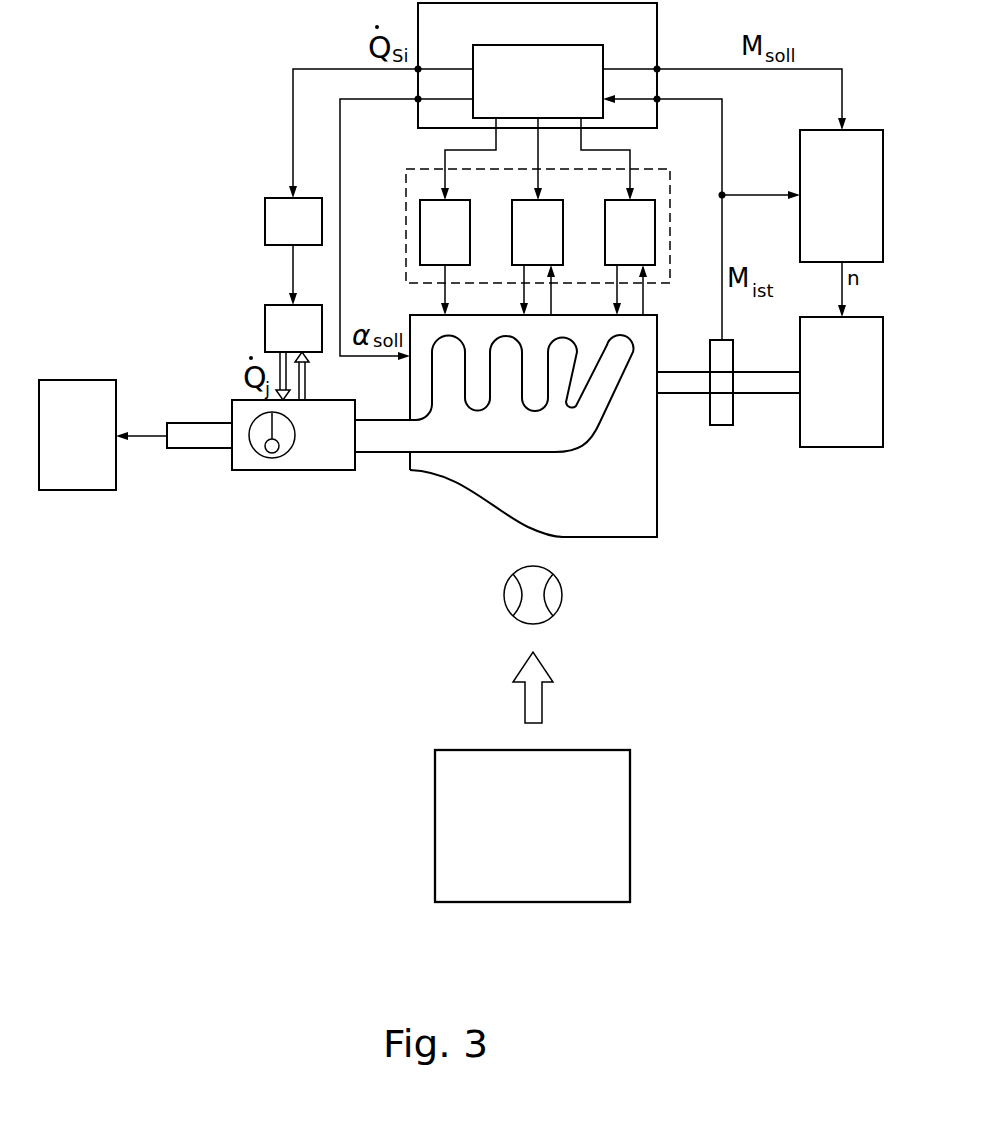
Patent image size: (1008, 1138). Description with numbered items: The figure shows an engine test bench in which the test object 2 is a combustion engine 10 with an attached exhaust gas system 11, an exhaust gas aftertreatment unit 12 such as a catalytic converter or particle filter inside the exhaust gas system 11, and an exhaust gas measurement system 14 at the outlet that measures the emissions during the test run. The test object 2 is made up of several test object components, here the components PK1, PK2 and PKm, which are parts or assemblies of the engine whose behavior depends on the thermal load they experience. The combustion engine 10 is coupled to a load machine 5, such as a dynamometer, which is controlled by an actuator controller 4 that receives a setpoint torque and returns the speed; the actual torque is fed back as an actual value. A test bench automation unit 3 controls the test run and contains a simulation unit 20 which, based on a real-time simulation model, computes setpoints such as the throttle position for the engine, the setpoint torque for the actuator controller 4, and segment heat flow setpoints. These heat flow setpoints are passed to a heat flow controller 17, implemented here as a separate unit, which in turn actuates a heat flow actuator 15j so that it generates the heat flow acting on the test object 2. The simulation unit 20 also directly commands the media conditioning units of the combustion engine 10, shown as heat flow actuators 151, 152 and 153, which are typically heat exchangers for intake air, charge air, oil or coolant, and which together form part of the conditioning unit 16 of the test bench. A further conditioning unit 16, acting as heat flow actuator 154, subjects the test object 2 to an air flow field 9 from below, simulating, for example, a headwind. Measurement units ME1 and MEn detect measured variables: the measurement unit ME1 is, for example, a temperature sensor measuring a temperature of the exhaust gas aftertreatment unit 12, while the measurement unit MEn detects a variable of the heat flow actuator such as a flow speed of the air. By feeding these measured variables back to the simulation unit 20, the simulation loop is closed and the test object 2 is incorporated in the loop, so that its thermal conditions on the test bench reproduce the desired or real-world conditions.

The test bench automation unit 3 is at (622, 48).
The simulation unit 20 is at (521, 88).
The heat flow controller 17 is at (276, 238).
The heat flow actuator 15j is at (315, 341).
The heat flow actuator 151 is at (465, 247).
The heat flow actuator 152 is at (557, 247).
The heat flow actuator 153 is at (650, 247).
The heat flow actuator 154 is at (654, 799).
The conditioning unit 16 is at (652, 168).
The actuator controller 4 is at (862, 208).
The load machine 5 is at (827, 395).
The combustion engine 10 is at (579, 501).
The exhaust gas system 11 is at (385, 437).
The exhaust gas aftertreatment unit 12 is at (311, 447).
The exhaust gas measurement system 14 is at (55, 443).
The test object 2 is at (450, 507).
The air flow field 9 is at (542, 700).
The measurement unit ME1 is at (268, 458).
The measurement unit MEn is at (563, 597).
The test object component PK1 is at (300, 490).
The test object component PK2 is at (505, 446).
The test object component PKm is at (678, 517).